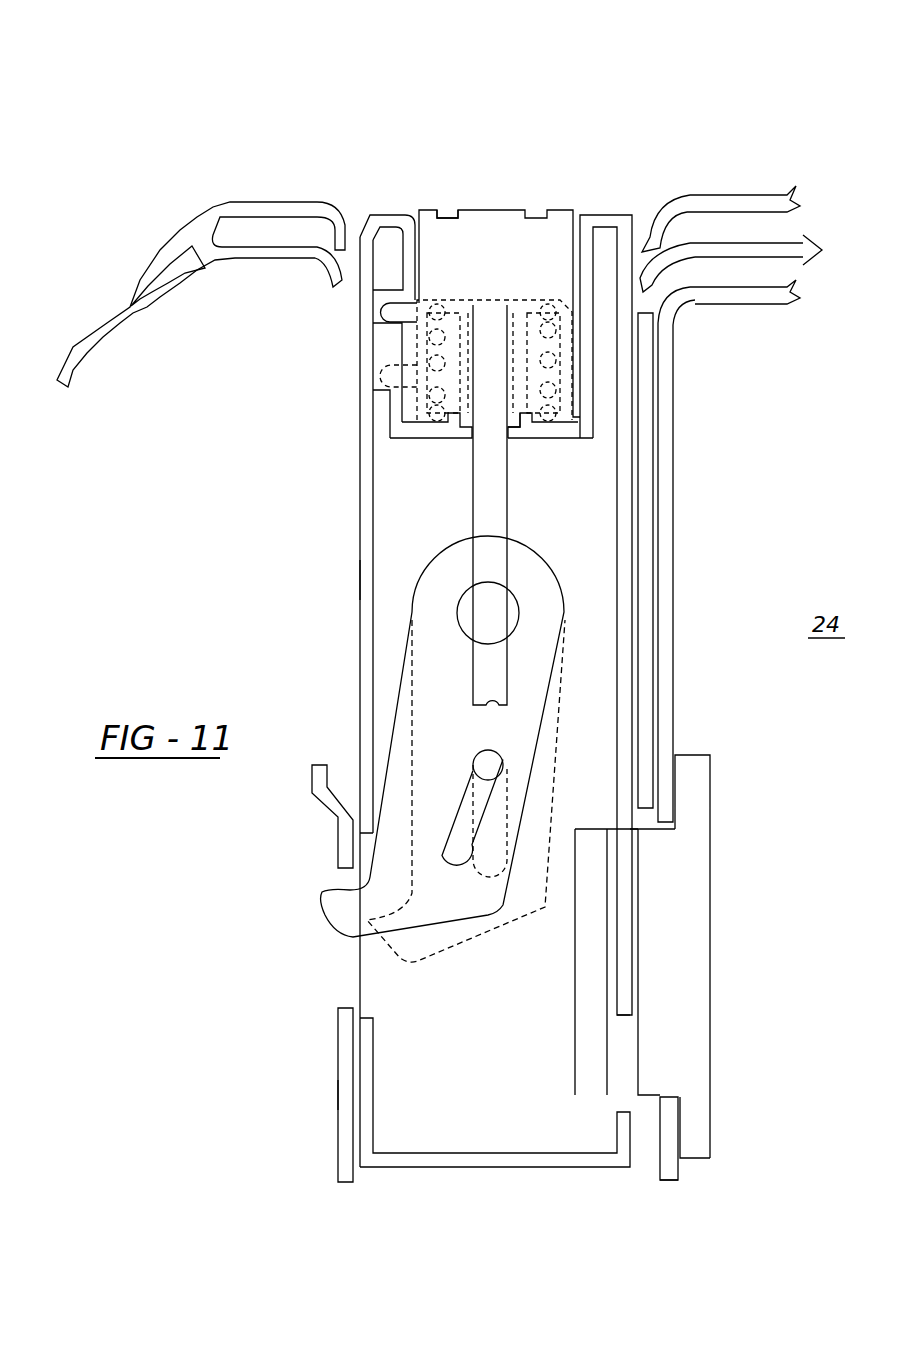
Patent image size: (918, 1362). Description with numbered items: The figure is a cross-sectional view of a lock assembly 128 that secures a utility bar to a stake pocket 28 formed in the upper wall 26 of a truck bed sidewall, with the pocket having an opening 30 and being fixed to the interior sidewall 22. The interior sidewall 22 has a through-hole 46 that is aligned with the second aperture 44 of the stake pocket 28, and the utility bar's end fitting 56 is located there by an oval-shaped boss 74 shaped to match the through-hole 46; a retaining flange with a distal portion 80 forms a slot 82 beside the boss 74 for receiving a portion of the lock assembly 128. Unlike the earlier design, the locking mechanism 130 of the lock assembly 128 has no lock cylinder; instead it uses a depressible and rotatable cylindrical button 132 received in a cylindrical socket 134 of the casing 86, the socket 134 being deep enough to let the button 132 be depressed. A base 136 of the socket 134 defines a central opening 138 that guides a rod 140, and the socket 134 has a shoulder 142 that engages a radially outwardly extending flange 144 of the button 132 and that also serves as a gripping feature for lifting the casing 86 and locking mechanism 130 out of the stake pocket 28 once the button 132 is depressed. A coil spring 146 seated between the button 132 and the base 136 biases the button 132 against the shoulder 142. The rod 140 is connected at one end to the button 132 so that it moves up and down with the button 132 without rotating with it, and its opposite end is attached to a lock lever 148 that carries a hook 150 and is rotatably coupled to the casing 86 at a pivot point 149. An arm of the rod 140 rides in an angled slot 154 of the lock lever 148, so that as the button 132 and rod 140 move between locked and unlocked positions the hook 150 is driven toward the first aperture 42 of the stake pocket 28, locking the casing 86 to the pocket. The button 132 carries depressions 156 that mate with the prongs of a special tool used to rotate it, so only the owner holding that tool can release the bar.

The interior sidewall 22 is at (668, 1170).
The upper wall 26 is at (735, 200).
The stake pocket 28 is at (332, 1092).
The opening 30 is at (343, 200).
The first aperture 42 is at (343, 1005).
The second aperture 44 is at (647, 815).
The through-hole 46 is at (670, 1075).
The end fitting 56 is at (695, 826).
The oval-shaped boss 74 is at (650, 938).
The distal portion 80 is at (593, 948).
The slot 82 is at (623, 1048).
The casing 86 is at (366, 572).
The lock assembly 128 is at (655, 72).
The locking mechanism 130 is at (408, 472).
The cylindrical button 132 is at (561, 210).
The cylindrical socket 134 is at (596, 380).
The base 136 is at (575, 440).
The central opening 138 is at (513, 440).
The rod 140 is at (485, 482).
The shoulder 142 is at (408, 292).
The radially outwardly extending flange 144 is at (398, 313).
The coil spring 146 is at (440, 365).
The lock lever 148 is at (550, 620).
The pivot point 149 is at (515, 598).
The hook 150 is at (343, 905).
The angled slot 154 is at (460, 863).
The depressions 156 is at (448, 212).